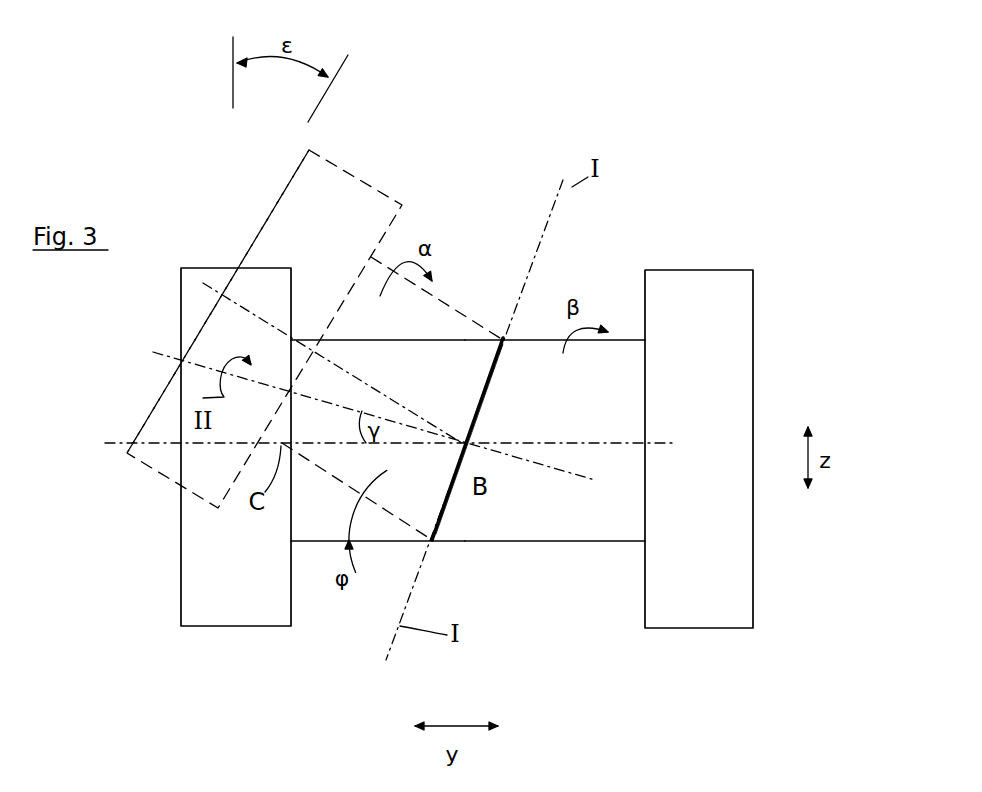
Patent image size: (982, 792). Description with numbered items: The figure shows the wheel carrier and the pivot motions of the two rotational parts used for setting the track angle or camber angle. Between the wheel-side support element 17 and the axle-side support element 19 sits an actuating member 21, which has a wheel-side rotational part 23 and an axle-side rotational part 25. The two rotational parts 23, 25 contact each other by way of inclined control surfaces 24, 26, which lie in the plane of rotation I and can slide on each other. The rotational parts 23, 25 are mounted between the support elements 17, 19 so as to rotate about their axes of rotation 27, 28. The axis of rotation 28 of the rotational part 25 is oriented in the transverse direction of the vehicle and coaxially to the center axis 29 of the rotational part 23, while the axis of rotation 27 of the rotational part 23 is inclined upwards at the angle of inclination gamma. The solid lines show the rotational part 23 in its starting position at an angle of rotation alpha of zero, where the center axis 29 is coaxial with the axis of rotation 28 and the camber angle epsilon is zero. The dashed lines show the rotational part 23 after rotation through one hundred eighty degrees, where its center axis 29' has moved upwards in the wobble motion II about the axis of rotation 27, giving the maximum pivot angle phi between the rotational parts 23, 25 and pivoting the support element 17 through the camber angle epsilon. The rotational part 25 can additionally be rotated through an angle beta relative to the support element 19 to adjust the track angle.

The wheel-side support element 17 is at (218, 598).
The axle-side support element 19 is at (710, 601).
The actuating member 21 is at (543, 138).
The wheel-side rotational part 23 is at (452, 308).
The inclined control surface 24 is at (497, 355).
The axle-side rotational part 25 is at (600, 543).
The inclined control surface 26 is at (512, 360).
The axis of rotation 27 is at (153, 352).
The axis of rotation 28 is at (543, 442).
The center axis 29 is at (243, 329).
The center axis 29' is at (218, 301).